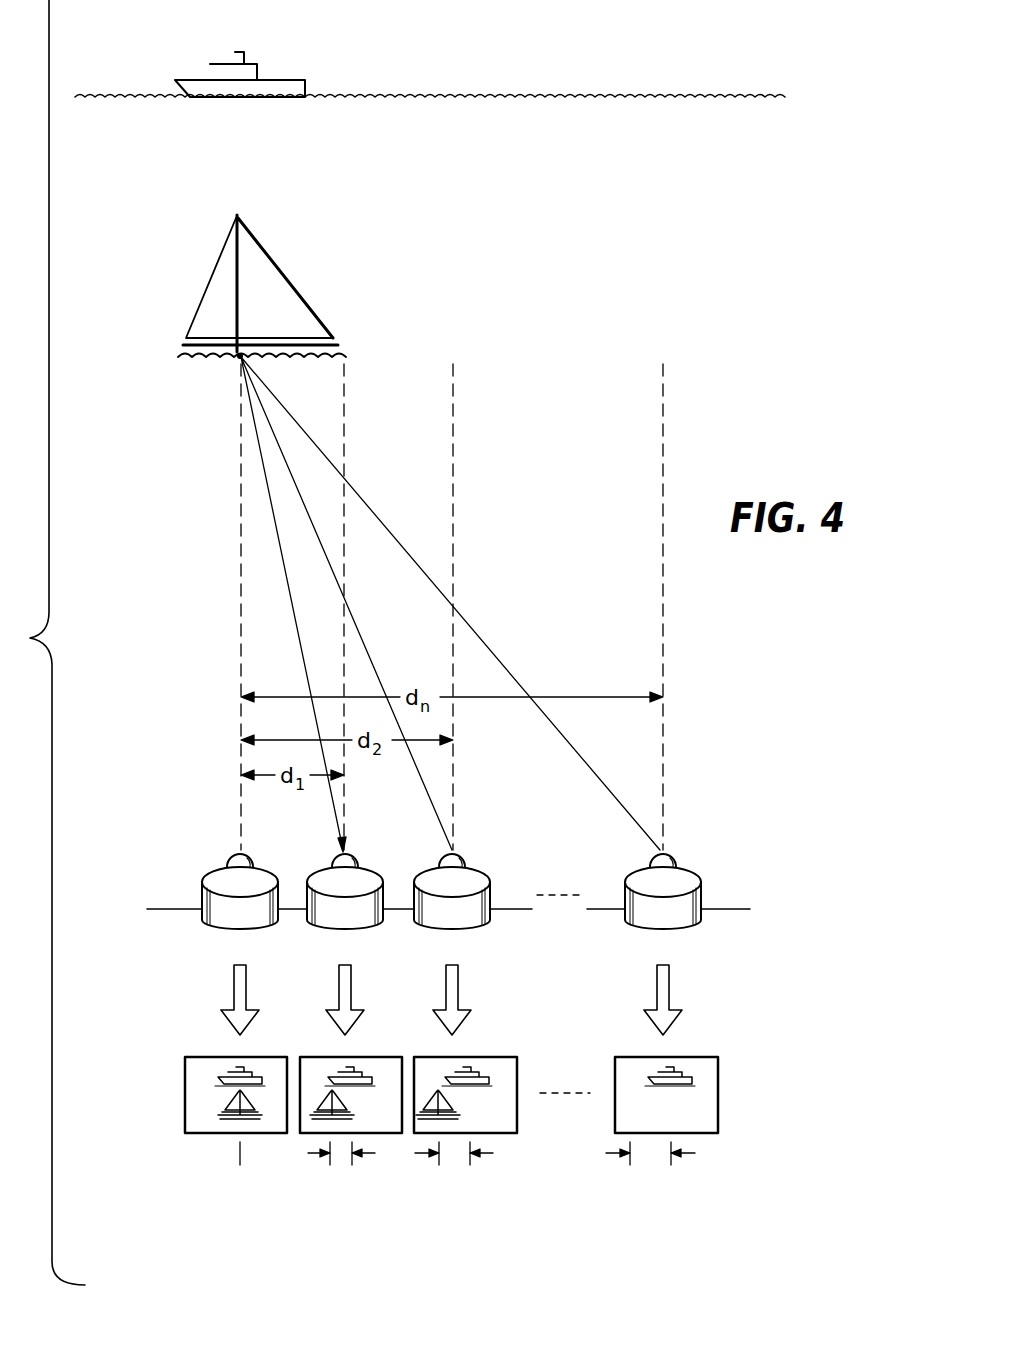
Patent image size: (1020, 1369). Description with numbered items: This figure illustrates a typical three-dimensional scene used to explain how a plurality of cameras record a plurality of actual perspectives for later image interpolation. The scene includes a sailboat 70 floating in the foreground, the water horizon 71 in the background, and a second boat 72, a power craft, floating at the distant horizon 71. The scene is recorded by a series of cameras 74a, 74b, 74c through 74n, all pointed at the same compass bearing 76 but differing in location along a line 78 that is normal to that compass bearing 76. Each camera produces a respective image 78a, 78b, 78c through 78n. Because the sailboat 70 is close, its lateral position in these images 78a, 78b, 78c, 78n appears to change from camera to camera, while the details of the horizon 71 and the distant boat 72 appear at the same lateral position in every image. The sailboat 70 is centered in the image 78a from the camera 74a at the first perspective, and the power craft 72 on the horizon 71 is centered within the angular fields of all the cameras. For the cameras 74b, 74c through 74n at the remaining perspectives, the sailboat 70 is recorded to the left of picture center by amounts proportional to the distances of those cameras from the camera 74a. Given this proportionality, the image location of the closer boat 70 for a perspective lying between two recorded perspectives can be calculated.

The sailboat 70 is at (303, 297).
The water horizon 71 is at (508, 97).
The second boat 72 is at (288, 81).
The camera 74a is at (205, 920).
The camera 74b is at (313, 921).
The camera 74c is at (418, 921).
The camera 74n is at (627, 923).
The compass bearing 76 is at (232, 367).
The line 78 is at (180, 909).
The image 78a is at (185, 1093).
The image 78b is at (302, 1133).
The image 78c is at (518, 1121).
The image 78n is at (718, 1120).